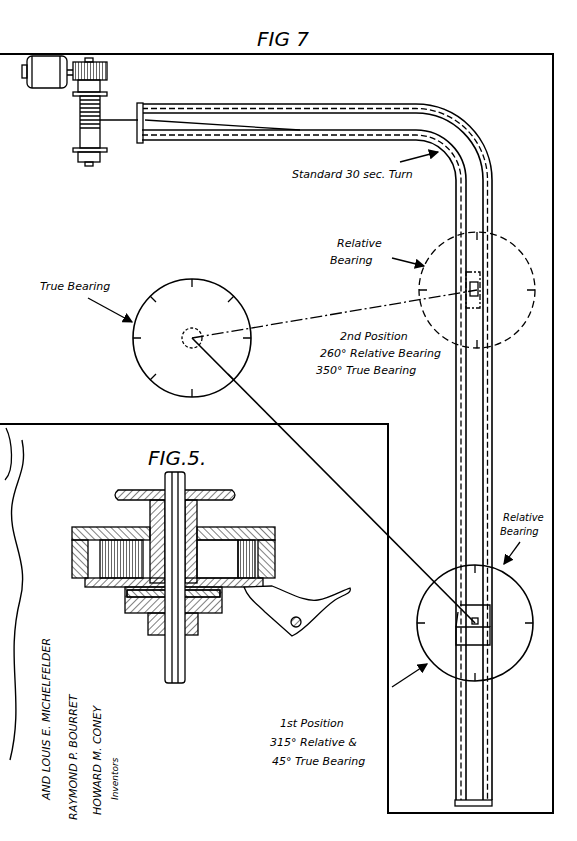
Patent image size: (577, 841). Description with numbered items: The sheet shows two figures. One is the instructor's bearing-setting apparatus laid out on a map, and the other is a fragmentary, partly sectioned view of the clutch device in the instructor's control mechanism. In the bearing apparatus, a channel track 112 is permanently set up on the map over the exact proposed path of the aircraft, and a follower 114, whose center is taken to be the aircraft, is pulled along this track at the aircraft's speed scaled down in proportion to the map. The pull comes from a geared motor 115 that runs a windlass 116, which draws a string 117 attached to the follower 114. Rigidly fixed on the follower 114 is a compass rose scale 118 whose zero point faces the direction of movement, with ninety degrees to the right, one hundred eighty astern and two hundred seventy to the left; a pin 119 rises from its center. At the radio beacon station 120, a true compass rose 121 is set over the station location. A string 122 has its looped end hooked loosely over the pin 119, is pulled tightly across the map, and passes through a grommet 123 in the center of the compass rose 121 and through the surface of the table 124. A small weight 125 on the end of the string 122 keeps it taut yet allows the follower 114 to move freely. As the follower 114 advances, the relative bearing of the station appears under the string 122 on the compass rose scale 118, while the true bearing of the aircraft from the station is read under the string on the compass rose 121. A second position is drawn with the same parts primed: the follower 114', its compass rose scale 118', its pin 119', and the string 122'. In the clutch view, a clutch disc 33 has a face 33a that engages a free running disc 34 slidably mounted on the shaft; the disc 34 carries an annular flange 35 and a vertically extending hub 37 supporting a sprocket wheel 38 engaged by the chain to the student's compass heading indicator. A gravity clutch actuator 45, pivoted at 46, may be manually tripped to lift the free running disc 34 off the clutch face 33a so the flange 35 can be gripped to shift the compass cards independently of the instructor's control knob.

In FIG. 7, the channel track 112 is at (210, 106).
In FIG. 7, the follower 114 is at (475, 631).
In FIG. 7, the follower (second position) 114' is at (477, 283).
In FIG. 7, the geared motor 115 is at (45, 86).
In FIG. 7, the windlass 116 is at (80, 135).
In FIG. 7, the string 117 is at (115, 120).
In FIG. 7, the compass rose scale 118 is at (535, 662).
In FIG. 7, the compass rose scale (second position) 118' is at (528, 336).
In FIG. 7, the pin 119 is at (426, 646).
In FIG. 7, the pin (second position) 119' is at (516, 266).
In FIG. 7, the radio beacon station 120 is at (192, 338).
In FIG. 7, the true compass rose 121 is at (166, 286).
In FIG. 7, the string 122 is at (333, 480).
In FIG. 7, the string (second position) 122' is at (334, 313).
In FIG. 7, the grommet 123 is at (192, 338).
In FIG. 7, the table surface 124 is at (70, 425).
In FIG. 7, the weight 125 is at (192, 338).
In FIG. 5, the clutch disc 33 is at (126, 614).
In FIG. 5, the clutch face 33a is at (128, 596).
In FIG. 5, the free running disc 34 is at (258, 554).
In FIG. 5, the annular flange 35 is at (276, 537).
In FIG. 5, the hub 37 is at (198, 512).
In FIG. 5, the sprocket wheel 38 is at (215, 492).
In FIG. 5, the clutch actuator 45 is at (278, 602).
In FIG. 5, the pivot 46 is at (302, 628).